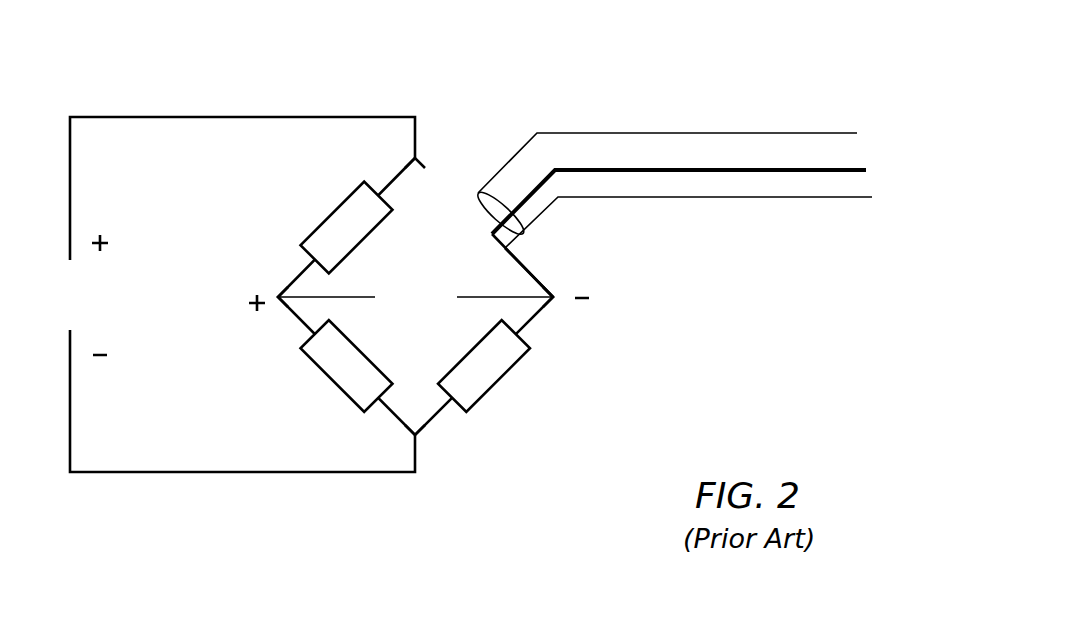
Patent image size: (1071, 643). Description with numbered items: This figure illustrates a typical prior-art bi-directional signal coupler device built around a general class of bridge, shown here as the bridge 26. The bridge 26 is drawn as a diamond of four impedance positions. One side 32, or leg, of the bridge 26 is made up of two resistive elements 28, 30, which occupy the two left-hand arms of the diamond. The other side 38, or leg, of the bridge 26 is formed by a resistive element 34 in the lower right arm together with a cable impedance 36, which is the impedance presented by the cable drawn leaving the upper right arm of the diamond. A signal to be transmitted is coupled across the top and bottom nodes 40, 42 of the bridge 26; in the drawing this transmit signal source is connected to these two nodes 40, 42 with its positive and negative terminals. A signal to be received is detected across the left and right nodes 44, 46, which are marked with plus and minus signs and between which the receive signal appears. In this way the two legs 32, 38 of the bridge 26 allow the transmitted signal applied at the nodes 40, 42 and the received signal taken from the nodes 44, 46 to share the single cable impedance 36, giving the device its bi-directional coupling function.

The bridge 26 is at (484, 68).
The resistive element 28 is at (327, 214).
The resistive element 30 is at (332, 382).
The side 32 is at (342, 528).
The resistive element 34 is at (499, 383).
The cable impedance 36 is at (806, 150).
The side 38 is at (498, 506).
The node 40 is at (417, 157).
The node 42 is at (418, 437).
The node 44 is at (276, 293).
The node 46 is at (555, 295).